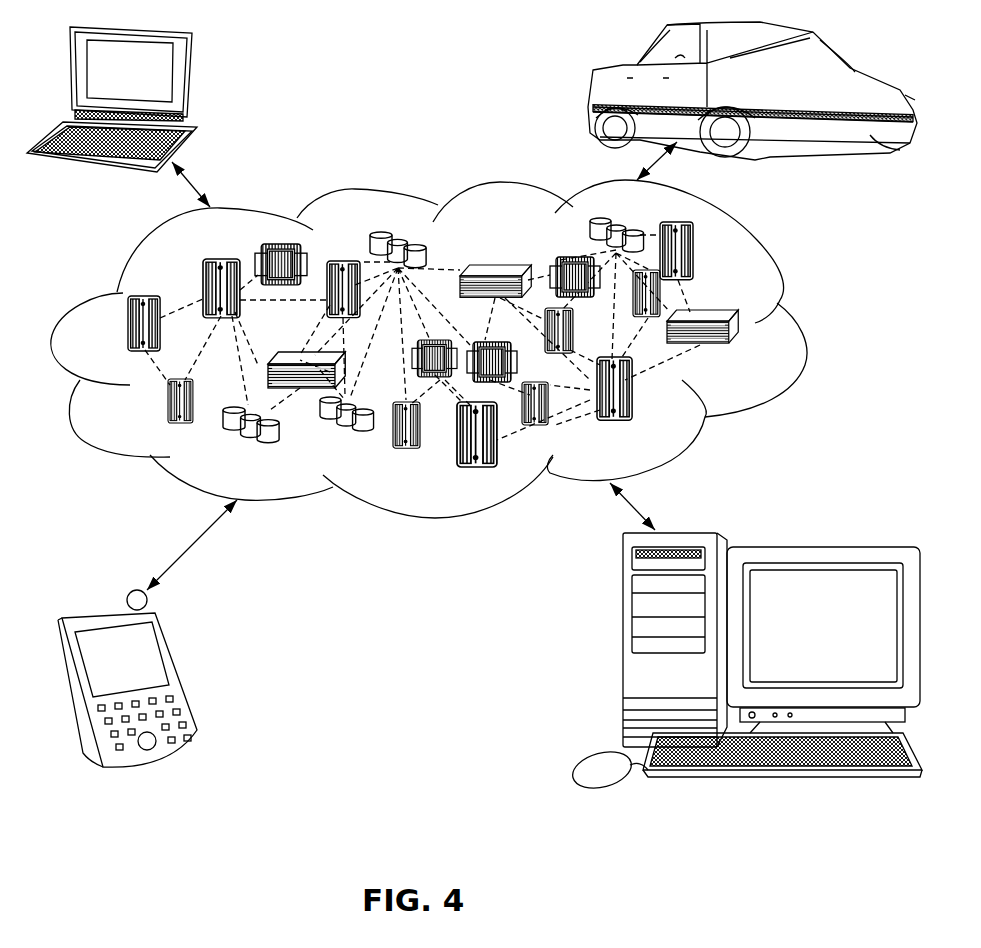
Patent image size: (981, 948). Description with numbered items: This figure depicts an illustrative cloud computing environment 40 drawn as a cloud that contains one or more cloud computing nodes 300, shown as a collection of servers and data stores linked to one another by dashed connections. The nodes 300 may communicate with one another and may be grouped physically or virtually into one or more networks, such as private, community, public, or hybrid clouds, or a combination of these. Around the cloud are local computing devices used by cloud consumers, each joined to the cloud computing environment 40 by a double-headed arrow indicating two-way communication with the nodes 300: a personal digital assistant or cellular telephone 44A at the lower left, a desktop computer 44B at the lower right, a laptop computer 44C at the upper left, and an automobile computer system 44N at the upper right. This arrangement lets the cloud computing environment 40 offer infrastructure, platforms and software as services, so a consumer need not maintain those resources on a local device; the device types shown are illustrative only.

The cloud computing environment 40 is at (787, 287).
The cloud computing nodes 300 is at (758, 347).
The personal digital assistant (PDA) or cellular telephone 44A is at (182, 672).
The desktop computer 44B is at (620, 650).
The laptop computer 44C is at (188, 77).
The automobile computer system 44N is at (593, 87).